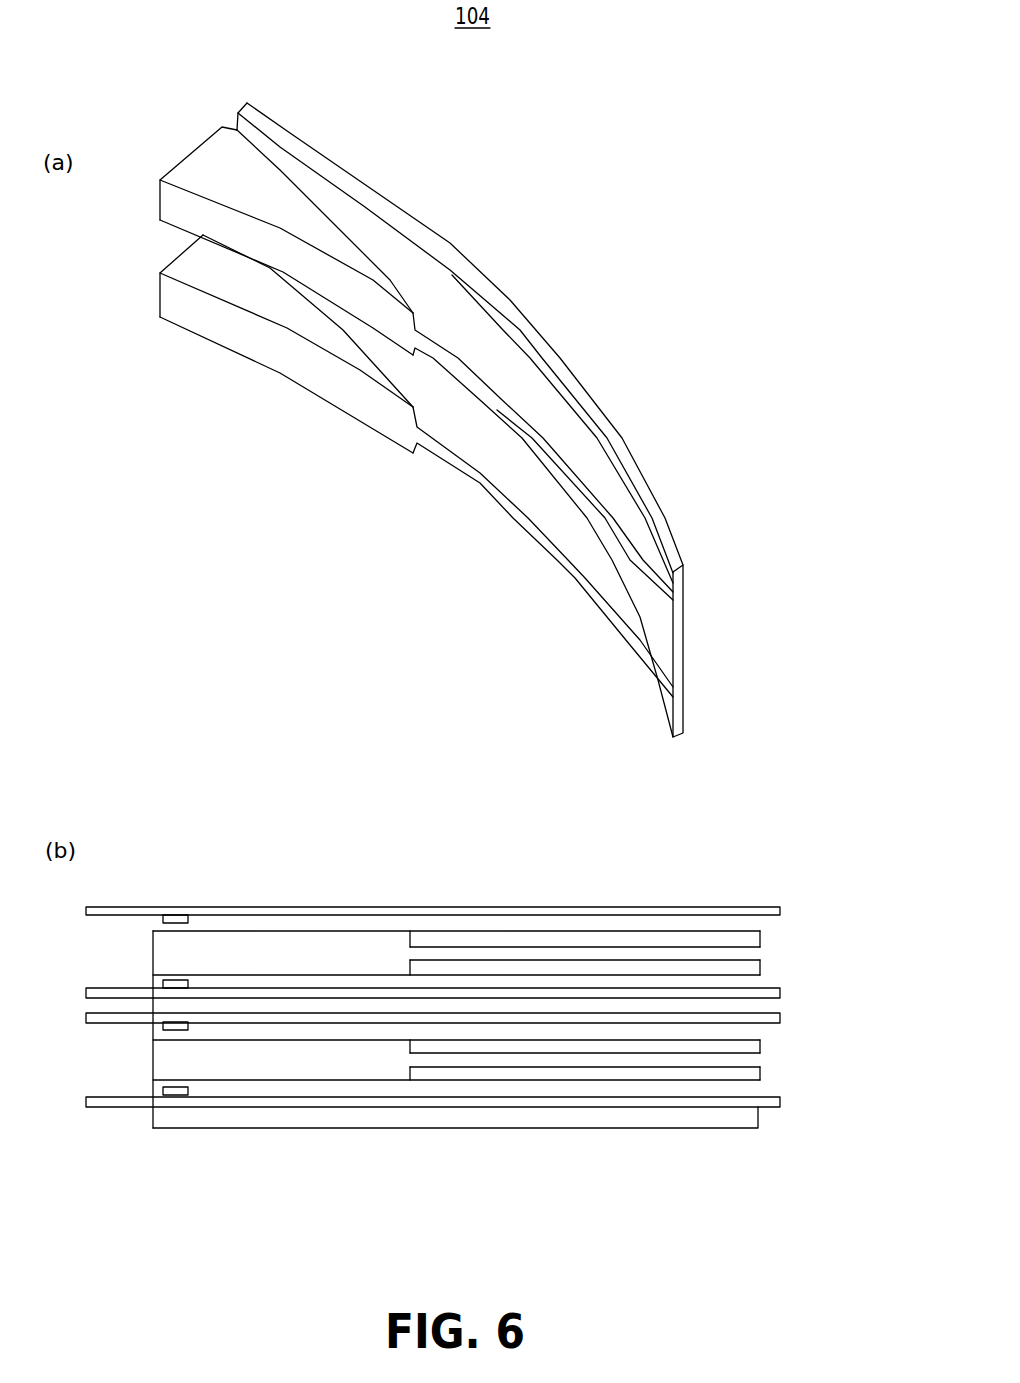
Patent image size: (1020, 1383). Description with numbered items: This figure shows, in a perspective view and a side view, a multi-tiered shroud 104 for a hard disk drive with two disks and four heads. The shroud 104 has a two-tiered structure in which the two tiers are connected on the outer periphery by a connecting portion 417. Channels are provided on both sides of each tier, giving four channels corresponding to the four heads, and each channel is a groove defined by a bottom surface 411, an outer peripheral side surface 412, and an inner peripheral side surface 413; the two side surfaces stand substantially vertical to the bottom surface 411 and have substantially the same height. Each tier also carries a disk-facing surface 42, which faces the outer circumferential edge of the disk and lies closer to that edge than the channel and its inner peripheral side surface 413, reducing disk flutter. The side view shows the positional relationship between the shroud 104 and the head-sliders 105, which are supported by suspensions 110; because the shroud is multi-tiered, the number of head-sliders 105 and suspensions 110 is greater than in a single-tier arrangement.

The shroud 104 is at (232, 1128).
The disk-facing surface 42 is at (240, 330).
The bottom surface 411 is at (530, 506).
The outer peripheral side surface 412 is at (657, 605).
The inner peripheral side surface 413 is at (400, 392).
The connecting portion 417 is at (687, 640).
The head-slider 105 is at (163, 1093).
The suspension 110 is at (282, 1106).